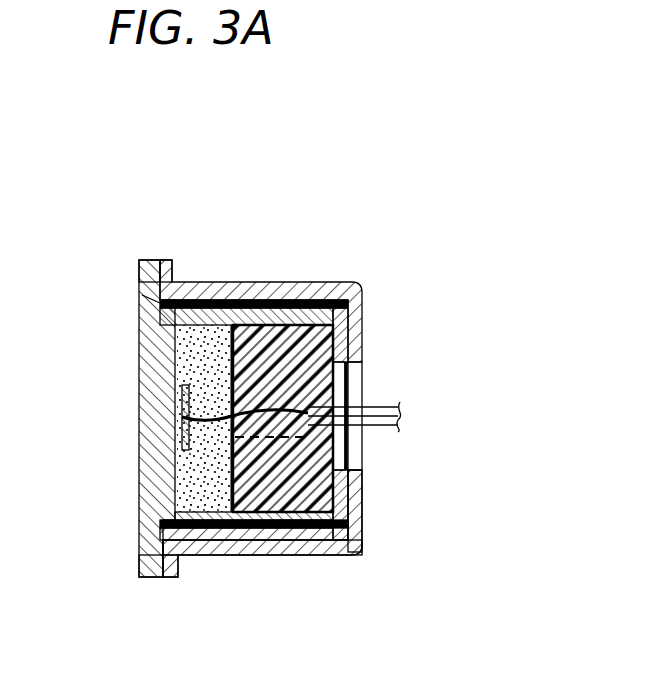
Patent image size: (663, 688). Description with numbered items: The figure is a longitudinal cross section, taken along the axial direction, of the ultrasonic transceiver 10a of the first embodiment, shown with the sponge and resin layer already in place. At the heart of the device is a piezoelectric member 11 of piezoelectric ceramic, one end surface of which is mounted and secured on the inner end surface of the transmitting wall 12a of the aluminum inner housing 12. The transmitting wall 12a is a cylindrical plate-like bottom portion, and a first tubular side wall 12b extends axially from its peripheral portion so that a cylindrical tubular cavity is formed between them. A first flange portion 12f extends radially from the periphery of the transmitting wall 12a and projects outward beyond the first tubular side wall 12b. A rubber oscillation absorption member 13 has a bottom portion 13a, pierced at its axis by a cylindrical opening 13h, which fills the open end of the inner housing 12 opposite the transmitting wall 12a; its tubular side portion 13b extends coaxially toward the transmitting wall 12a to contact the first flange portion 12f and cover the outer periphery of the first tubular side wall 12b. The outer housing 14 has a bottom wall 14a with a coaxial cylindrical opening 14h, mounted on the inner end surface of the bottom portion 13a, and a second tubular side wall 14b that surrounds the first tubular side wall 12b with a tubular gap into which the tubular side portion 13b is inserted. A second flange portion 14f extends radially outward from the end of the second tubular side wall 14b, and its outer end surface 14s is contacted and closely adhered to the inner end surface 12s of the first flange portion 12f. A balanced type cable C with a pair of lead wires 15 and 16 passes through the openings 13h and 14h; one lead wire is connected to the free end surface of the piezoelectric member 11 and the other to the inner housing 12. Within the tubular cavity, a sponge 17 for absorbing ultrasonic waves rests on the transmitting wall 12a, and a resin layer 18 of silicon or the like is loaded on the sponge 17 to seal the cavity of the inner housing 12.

The ultrasonic transceiver 10a is at (322, 192).
The piezoelectric member 11 is at (180, 415).
The inner housing 12 is at (139, 466).
The transmitting wall 12a is at (148, 362).
The first tubular side wall 12b is at (225, 282).
The first flange portion 12f is at (139, 280).
The inner end surface 12s is at (142, 295).
The oscillation absorption member 13 is at (348, 282).
The bottom portion 13a is at (364, 310).
The tubular side portion 13b is at (275, 282).
The cylindrical opening 13h is at (345, 376).
The outer housing 14 is at (340, 556).
The bottom wall 14a is at (355, 516).
The second tubular side wall 14b is at (198, 557).
The second flange portion 14f is at (170, 578).
The cylindrical opening 14h is at (355, 450).
The outer end surface 14s is at (147, 262).
The lead wire 15 is at (222, 422).
The lead wire 16 is at (277, 433).
The sponge 17 is at (193, 282).
The resin layer 18 is at (322, 282).
The balanced type cable C is at (403, 413).